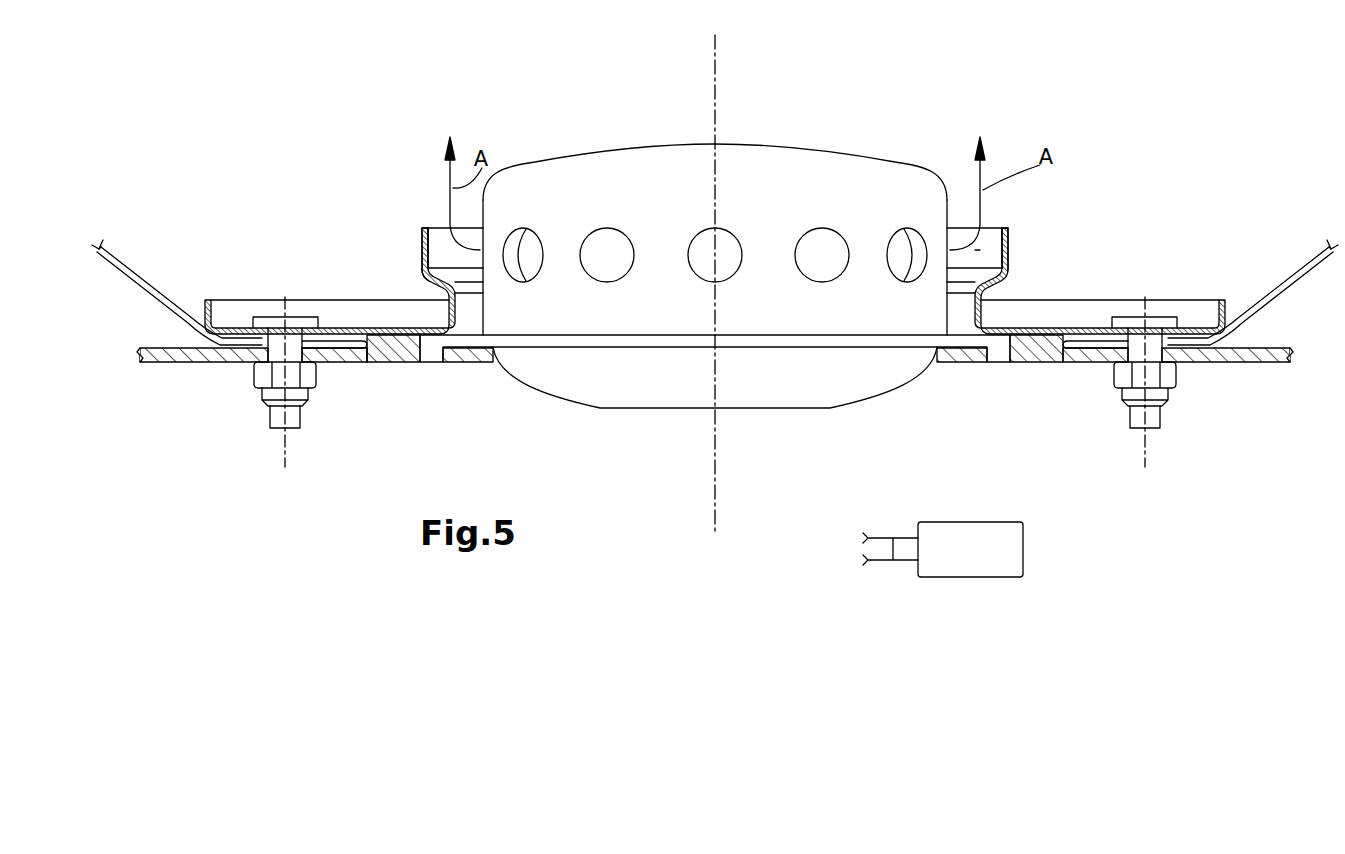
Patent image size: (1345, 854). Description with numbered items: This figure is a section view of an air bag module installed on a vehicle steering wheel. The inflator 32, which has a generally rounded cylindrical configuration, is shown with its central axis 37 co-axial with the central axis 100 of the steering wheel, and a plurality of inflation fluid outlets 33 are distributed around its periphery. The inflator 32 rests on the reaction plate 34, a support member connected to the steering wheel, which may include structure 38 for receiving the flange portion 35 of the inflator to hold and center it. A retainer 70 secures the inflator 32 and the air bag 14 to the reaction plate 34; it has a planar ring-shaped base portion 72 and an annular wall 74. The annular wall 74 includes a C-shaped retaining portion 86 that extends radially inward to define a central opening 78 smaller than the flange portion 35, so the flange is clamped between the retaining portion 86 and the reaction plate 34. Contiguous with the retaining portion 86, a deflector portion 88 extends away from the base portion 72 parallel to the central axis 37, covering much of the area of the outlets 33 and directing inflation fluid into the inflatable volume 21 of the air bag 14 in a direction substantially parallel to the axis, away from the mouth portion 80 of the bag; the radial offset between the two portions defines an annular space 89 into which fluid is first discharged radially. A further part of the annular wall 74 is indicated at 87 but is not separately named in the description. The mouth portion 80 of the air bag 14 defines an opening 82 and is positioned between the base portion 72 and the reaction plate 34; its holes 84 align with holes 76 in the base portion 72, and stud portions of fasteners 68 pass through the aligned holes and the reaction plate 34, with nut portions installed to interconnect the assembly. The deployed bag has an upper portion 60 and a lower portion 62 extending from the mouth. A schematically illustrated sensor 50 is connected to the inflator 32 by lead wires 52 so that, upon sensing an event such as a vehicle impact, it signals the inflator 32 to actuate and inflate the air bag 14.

The air bag 14 is at (126, 297).
The inflatable volume 21 is at (520, 107).
The inflator 32 is at (715, 198).
The inflation fluid outlets 33 is at (904, 250).
The reaction plate 34 is at (160, 352).
The flange portion 35 is at (430, 347).
The central axis 37 is at (714, 104).
The structure 38 is at (400, 350).
The sensor 50 is at (976, 545).
The lead wires 52 is at (894, 558).
The upper portion 60 is at (168, 302).
The lower portion 62 is at (1302, 280).
The fasteners 68 is at (1152, 412).
The retainer 70 is at (1250, 332).
The base portion 72 is at (385, 328).
The annular wall 74 is at (715, 236).
The holes 76 is at (1135, 318).
The central opening 78 is at (467, 310).
The mouth portion 80 is at (330, 341).
The opening 82 is at (362, 360).
The holes 84 is at (1158, 330).
The retaining portion 86 is at (990, 304).
The bend 87 is at (437, 297).
The deflector portion 88 is at (1012, 260).
The annular space 89 is at (995, 222).
The central axis 100 is at (717, 73).